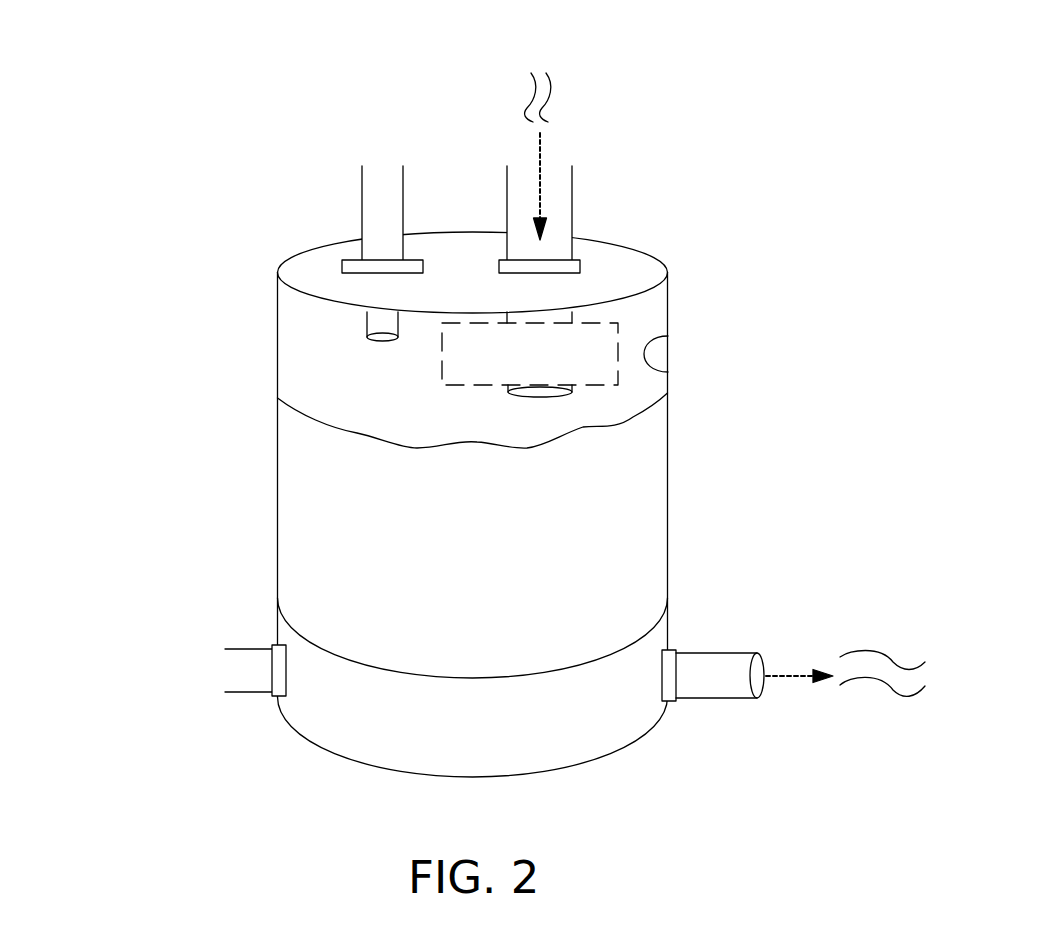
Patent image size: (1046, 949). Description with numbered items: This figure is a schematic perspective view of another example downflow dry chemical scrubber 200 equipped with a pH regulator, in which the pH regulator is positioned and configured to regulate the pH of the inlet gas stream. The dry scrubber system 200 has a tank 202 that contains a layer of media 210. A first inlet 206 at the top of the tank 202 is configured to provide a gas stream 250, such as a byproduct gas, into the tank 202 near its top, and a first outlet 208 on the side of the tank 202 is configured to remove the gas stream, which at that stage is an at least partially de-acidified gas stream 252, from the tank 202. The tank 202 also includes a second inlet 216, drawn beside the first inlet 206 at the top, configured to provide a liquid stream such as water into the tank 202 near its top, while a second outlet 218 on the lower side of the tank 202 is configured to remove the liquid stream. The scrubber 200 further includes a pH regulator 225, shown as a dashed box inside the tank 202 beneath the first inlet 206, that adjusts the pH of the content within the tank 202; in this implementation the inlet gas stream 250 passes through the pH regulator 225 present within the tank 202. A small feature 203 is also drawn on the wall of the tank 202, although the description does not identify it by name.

The dry chemical scrubber 200 is at (143, 50).
The tank 202 is at (668, 297).
The vessel wall port 203 is at (668, 372).
The first inlet 206 is at (572, 224).
The first outlet 208 is at (757, 652).
The media 210 is at (630, 526).
The second inlet 216 is at (362, 198).
The second outlet 218 is at (247, 692).
The pH regulator 225 is at (547, 380).
The gas stream 250 is at (568, 100).
The de-acidified gas stream 252 is at (869, 703).